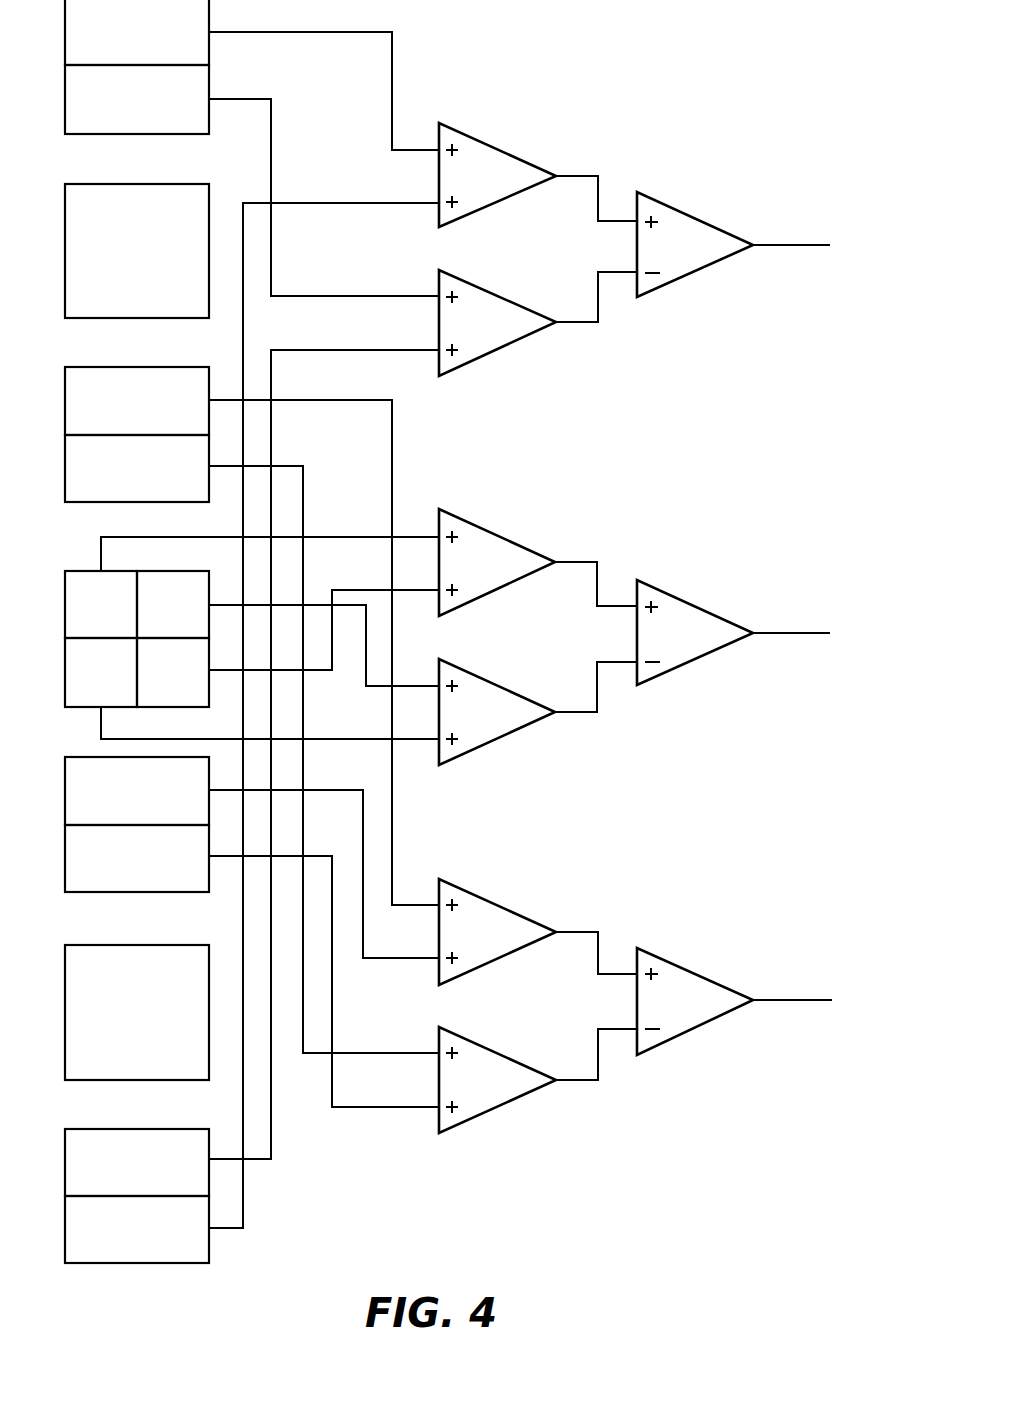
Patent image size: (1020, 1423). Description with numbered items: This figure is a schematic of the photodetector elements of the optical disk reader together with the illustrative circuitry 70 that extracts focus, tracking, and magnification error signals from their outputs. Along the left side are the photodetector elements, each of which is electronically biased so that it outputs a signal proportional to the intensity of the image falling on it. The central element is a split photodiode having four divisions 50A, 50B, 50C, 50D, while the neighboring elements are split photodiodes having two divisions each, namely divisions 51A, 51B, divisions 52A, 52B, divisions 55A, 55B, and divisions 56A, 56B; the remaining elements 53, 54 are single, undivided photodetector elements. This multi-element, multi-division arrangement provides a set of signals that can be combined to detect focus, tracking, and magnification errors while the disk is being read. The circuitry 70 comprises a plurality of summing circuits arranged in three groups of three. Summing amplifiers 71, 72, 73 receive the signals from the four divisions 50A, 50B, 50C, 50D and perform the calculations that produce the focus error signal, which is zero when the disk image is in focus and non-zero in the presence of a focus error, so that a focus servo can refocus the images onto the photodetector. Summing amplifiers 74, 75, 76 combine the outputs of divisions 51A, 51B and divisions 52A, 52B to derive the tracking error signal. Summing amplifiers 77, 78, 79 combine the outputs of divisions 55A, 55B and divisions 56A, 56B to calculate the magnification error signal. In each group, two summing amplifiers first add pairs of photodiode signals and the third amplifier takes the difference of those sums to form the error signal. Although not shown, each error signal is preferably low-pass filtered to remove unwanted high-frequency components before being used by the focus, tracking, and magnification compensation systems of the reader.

The circuitry 70 is at (646, 86).
The division of central split photodiode 50A is at (252, 688).
The division of central split photodiode 50B is at (252, 587).
The division of central split photodiode 50C is at (288, 628).
The division of central split photodiode 50D is at (288, 648).
The division of split photodiode 51A is at (252, 636).
The division of split photodiode 51B is at (252, 744).
The division of split photodiode 52A is at (252, 857).
The division of split photodiode 52B is at (252, 966).
The photodetector element 53 is at (137, 251).
The photodetector element 54 is at (137, 1012).
The division of split photodiode 55A is at (252, 75).
The division of split photodiode 55B is at (252, 180).
The division of split photodiode 56A is at (252, 773).
The division of split photodiode 56B is at (252, 733).
The summing amplifier 71 is at (507, 535).
The summing amplifier 72 is at (502, 738).
The summing amplifier 73 is at (700, 607).
The summing amplifier 74 is at (493, 902).
The summing amplifier 75 is at (503, 1107).
The summing amplifier 76 is at (688, 968).
The summing amplifier 77 is at (492, 142).
The summing amplifier 78 is at (508, 347).
The summing amplifier 79 is at (686, 212).